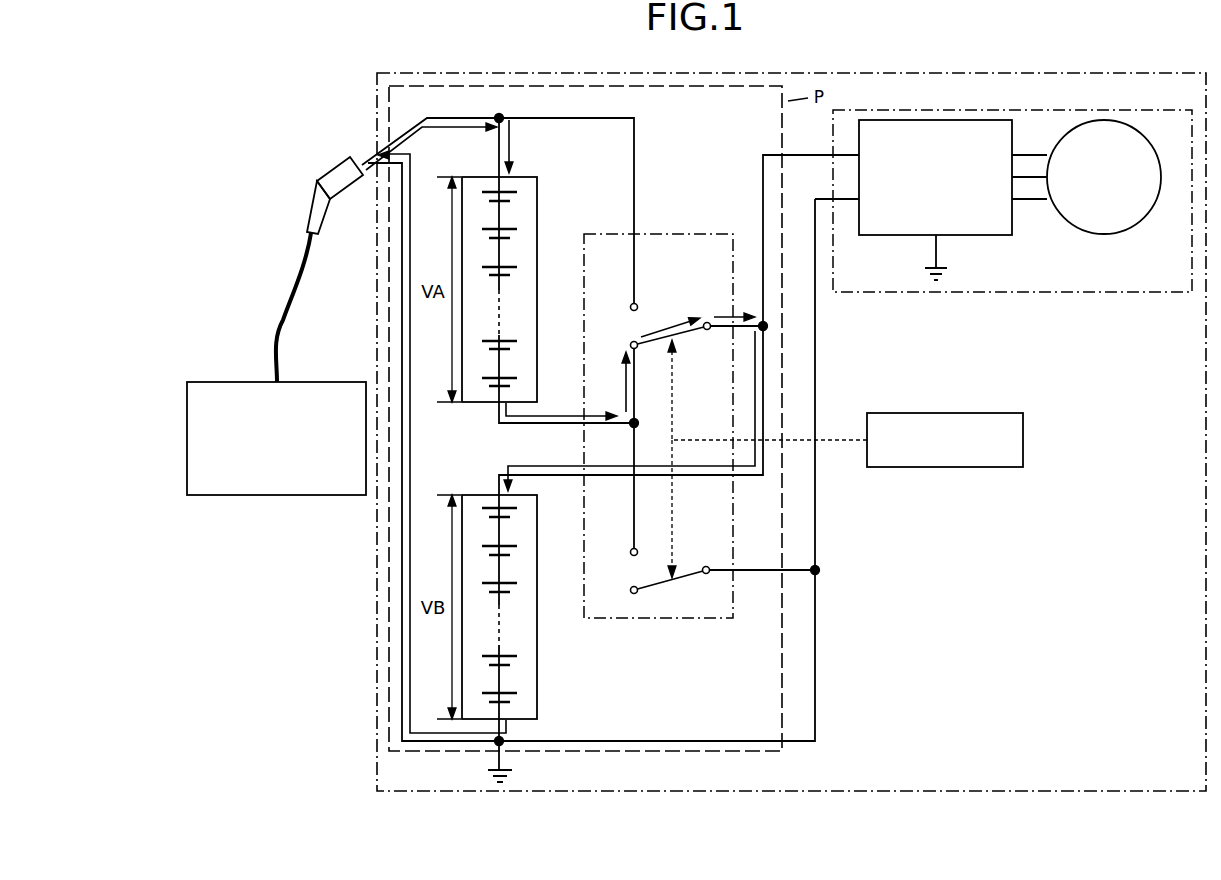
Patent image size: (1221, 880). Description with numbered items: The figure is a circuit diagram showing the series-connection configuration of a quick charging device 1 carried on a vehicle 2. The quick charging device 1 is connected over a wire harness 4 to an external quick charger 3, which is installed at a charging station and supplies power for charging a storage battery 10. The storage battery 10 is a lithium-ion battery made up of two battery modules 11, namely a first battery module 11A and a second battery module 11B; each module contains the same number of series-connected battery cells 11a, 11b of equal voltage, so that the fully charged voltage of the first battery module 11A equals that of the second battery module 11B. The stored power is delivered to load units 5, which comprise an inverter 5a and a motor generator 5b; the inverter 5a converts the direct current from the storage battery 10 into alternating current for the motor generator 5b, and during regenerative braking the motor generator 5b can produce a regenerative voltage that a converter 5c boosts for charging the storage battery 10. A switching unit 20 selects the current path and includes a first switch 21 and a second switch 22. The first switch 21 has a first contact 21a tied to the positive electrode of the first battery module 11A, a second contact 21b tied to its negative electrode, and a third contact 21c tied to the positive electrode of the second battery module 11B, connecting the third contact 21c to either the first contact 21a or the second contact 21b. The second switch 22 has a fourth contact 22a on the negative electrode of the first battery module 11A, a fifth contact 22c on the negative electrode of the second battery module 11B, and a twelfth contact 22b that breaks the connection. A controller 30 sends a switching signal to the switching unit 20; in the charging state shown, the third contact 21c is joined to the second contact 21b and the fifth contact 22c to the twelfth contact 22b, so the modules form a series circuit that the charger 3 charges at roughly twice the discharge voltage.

The quick charging device 1 is at (676, 145).
The vehicle 2 is at (776, 73).
The external charger (quick charger) 3 is at (325, 382).
The wire harness 4 is at (447, 118).
The load units 5 is at (1124, 292).
The inverter 5a is at (972, 238).
The motor generator 5b is at (1095, 235).
The converter 5c is at (951, 200).
The storage battery 10 is at (571, 185).
The battery modules 11 is at (476, 404).
The first battery module 11A is at (517, 324).
The second battery module 11B is at (536, 607).
The battery cells 11a is at (505, 190).
The battery cells 11b is at (512, 507).
The switching unit 20 is at (684, 233).
The first switch 21 is at (659, 318).
The first contact 21a is at (637, 303).
The second contact 21b is at (631, 342).
The third contact 21c is at (707, 331).
The second switch 22 is at (659, 583).
The fourth contact 22a is at (630, 556).
The twelfth contact 22b is at (634, 594).
The fifth contact 22c is at (705, 574).
The controller 30 is at (995, 413).